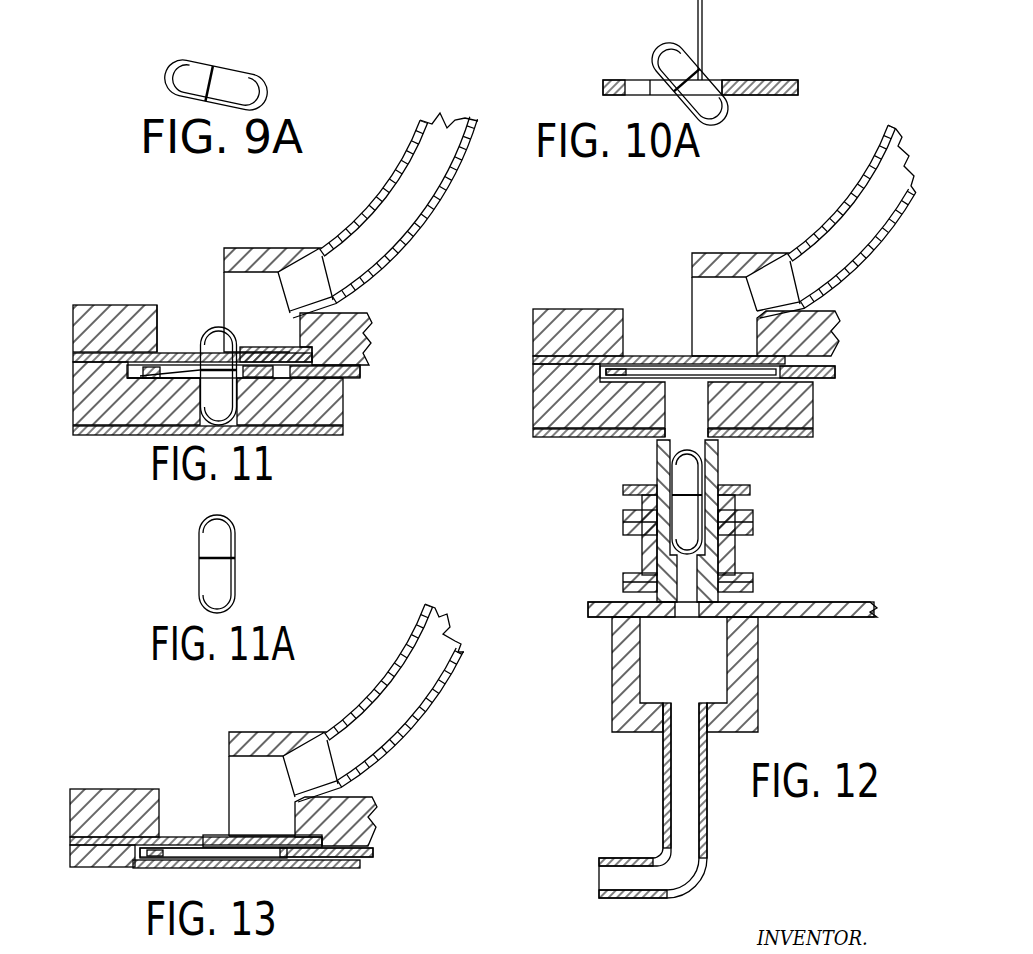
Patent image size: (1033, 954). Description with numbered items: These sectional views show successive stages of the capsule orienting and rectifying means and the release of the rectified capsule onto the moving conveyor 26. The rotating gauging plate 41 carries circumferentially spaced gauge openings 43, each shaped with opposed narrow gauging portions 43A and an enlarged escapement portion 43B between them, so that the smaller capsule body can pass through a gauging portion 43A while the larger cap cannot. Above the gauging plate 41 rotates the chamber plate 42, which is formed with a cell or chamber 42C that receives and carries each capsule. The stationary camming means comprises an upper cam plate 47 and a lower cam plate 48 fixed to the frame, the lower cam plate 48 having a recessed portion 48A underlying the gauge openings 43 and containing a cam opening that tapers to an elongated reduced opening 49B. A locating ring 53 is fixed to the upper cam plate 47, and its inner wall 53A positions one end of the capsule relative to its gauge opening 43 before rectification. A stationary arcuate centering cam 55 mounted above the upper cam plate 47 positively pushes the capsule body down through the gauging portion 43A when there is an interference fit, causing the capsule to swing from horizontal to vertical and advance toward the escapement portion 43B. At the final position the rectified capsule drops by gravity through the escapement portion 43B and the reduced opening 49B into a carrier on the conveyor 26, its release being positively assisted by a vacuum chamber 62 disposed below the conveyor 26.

In FIG. 12, the moving conveyor 26 is at (768, 541).
In FIG. 10A, the gauging plate 41 is at (775, 80).
In FIG. 11, the gauging plate 41 is at (73, 436).
In FIG. 12, the gauging plate 41 is at (822, 378).
In FIG. 13, the gauging plate 41 is at (360, 857).
In FIG. 12, the chamber plate 42 is at (750, 253).
In FIG. 13, the chamber plate 42 is at (283, 732).
In FIG. 12, the cell or chamber 42C is at (708, 290).
In FIG. 13, the cell or chamber 42C is at (255, 770).
In FIG. 10A, the gauge opening 43 is at (720, 80).
In FIG. 12, the gauge opening 43 is at (640, 367).
In FIG. 13, the gauge opening 43 is at (168, 850).
In FIG. 11, the gauging portion 43A is at (165, 366).
In FIG. 11, the escapement portion 43B is at (160, 378).
In FIG. 11, the upper cam plate 47 is at (75, 357).
In FIG. 12, the upper cam plate 47 is at (533, 358).
In FIG. 13, the upper cam plate 47 is at (72, 840).
In FIG. 11, the lower cam plate 48 is at (73, 394).
In FIG. 12, the lower cam plate 48 is at (548, 437).
In FIG. 11, the recessed portion 48A is at (355, 365).
In FIG. 13, the recessed portion 48A is at (137, 865).
In FIG. 12, the reduced opening 49B is at (705, 418).
In FIG. 11, the locating ring 53 is at (90, 305).
In FIG. 12, the locating ring 53 is at (548, 309).
In FIG. 13, the locating ring 53 is at (80, 789).
In FIG. 11, the inner peripheral wall 53A is at (158, 312).
In FIG. 10A, the centering cam or guide 55 is at (703, 4).
In FIG. 12, the vacuum chamber 62 is at (730, 640).